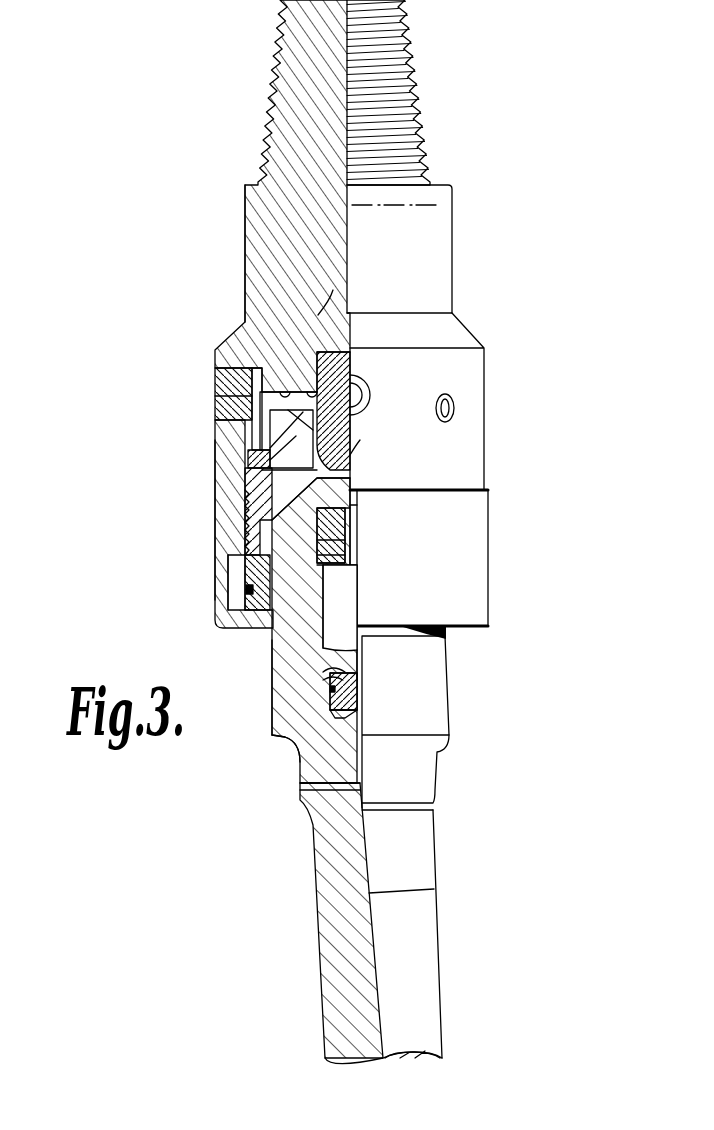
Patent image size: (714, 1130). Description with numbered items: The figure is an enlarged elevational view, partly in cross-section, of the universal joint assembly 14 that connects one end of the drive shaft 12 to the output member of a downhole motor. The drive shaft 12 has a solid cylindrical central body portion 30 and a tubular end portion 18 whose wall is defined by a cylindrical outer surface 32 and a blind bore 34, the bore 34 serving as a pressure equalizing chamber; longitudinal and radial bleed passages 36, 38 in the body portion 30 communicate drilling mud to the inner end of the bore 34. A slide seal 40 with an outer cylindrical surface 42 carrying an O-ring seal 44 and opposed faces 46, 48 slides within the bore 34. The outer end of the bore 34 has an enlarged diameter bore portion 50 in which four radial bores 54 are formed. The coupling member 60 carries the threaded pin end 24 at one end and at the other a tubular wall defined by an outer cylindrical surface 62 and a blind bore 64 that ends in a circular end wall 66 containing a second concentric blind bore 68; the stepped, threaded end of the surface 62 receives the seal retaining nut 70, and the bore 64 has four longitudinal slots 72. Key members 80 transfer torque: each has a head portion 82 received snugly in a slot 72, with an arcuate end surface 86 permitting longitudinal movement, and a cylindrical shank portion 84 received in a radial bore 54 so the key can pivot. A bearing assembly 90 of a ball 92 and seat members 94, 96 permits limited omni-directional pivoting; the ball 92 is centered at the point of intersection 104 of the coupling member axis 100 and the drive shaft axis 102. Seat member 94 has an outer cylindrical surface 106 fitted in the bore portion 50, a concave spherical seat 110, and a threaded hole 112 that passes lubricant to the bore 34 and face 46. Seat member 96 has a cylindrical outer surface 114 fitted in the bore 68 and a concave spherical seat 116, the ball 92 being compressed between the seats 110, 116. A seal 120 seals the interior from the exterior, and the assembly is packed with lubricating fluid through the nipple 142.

The drive shaft 12 is at (290, 891).
The universal joint assembly 14 is at (95, 203).
The tubular end portion 18 is at (452, 689).
The threaded pin end 24 is at (434, 103).
The central body portion 30 is at (413, 847).
The cylindrical outer surface 32 is at (282, 738).
The blind bore 34 is at (335, 640).
The longitudinal bleed passage 36 is at (368, 764).
The radial bleed passage 38 is at (312, 810).
The slide seal 40 is at (353, 690).
The outer cylindrical surface 42 is at (352, 660).
The O-ring seal 44 is at (297, 714).
The face 46 is at (332, 674).
The face 48 is at (352, 714).
The enlarged diameter bore portion 50 is at (335, 568).
The radial bore 54 is at (242, 503).
The coupling member 60 is at (243, 260).
The outer cylindrical surface 62 is at (215, 432).
The blind bore 64 is at (216, 395).
The circular end wall 66 is at (282, 392).
The second concentric blind bore 68 is at (318, 315).
The seal retaining nut 70 is at (214, 566).
The longitudinally extending slot 72 is at (253, 422).
The key member 80 is at (322, 488).
The head portion 82 is at (252, 462).
The shank portion 84 is at (308, 480).
The end surface 86 is at (292, 514).
The bearing assembly 90 is at (360, 506).
The ball 92 is at (352, 516).
The seat member 94 is at (352, 548).
The seat member 96 is at (345, 399).
The axis of the coupling member 100 is at (455, 207).
The axis of the drive shaft 102 is at (434, 889).
The point of intersection 104 is at (360, 488).
The outer cylindrical surface 106 is at (318, 538).
The concave spherical seat 110 is at (352, 530).
The threaded hole 112 is at (350, 568).
The cylindrical outer surface 114 is at (352, 370).
The concave spherical seat 116 is at (352, 460).
The seal 120 is at (240, 580).
The nipple 142 is at (455, 408).